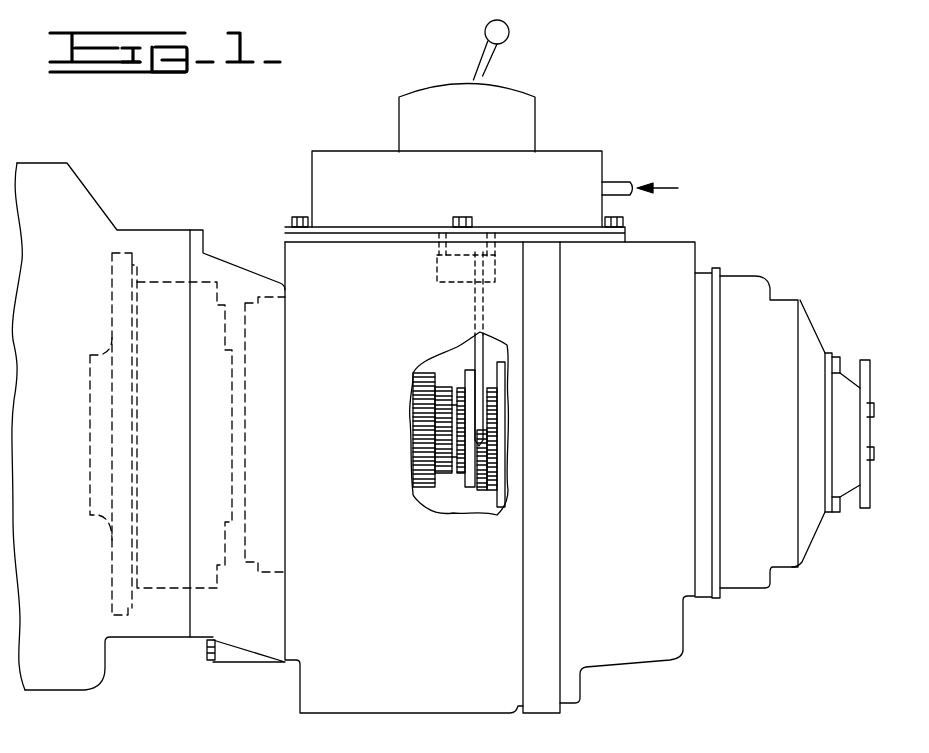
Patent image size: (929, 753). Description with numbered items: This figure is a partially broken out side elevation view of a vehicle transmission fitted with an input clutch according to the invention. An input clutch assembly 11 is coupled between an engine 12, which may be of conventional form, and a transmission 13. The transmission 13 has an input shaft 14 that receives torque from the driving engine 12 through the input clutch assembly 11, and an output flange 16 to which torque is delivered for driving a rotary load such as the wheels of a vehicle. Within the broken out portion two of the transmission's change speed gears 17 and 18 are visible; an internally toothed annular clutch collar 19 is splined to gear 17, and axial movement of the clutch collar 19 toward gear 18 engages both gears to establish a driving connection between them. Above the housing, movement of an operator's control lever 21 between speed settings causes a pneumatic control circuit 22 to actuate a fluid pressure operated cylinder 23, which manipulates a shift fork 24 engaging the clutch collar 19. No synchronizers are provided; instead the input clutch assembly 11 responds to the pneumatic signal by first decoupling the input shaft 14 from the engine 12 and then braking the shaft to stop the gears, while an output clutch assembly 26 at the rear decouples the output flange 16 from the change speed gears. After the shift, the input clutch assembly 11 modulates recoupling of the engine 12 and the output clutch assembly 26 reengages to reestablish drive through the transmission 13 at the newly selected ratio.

The input clutch assembly 11 is at (165, 282).
The engine 12 is at (43, 163).
The transmission 13 is at (416, 606).
The input shaft 14 is at (227, 428).
The output flange 16 is at (867, 375).
The change speed gear 17 is at (460, 477).
The change speed gear 18 is at (440, 487).
The clutch collar 19 is at (470, 487).
The control lever 21 is at (488, 60).
The pneumatic control circuit 22 is at (558, 158).
The fluid pressure operated cylinder 23 is at (437, 265).
The shift fork 24 is at (475, 302).
The output clutch assembly 26 is at (785, 300).